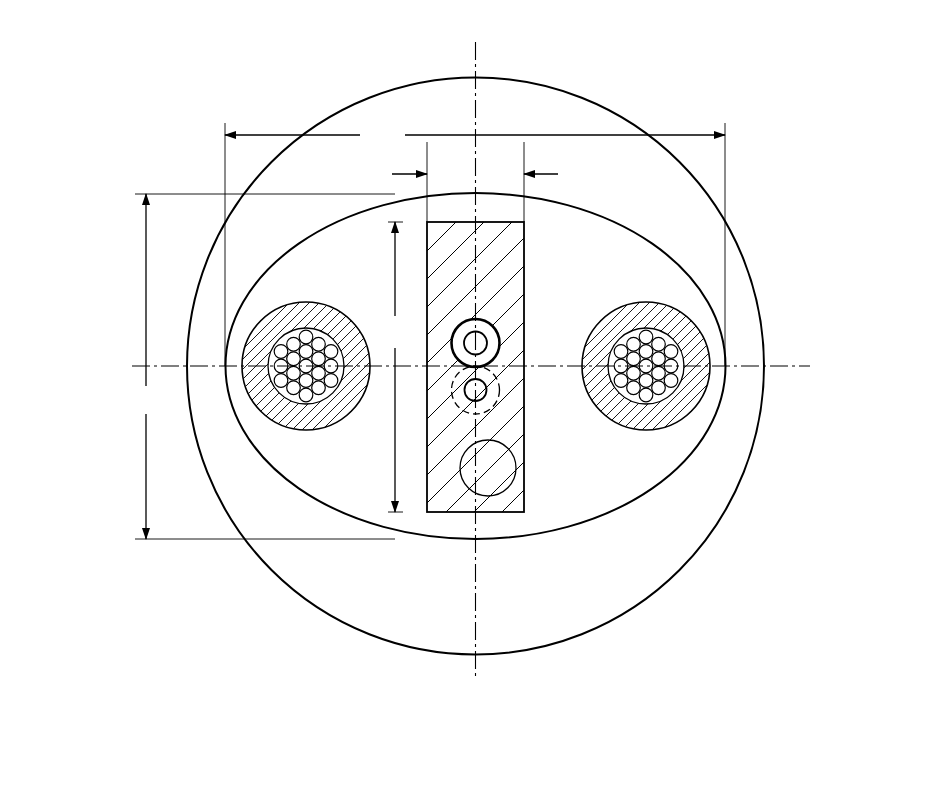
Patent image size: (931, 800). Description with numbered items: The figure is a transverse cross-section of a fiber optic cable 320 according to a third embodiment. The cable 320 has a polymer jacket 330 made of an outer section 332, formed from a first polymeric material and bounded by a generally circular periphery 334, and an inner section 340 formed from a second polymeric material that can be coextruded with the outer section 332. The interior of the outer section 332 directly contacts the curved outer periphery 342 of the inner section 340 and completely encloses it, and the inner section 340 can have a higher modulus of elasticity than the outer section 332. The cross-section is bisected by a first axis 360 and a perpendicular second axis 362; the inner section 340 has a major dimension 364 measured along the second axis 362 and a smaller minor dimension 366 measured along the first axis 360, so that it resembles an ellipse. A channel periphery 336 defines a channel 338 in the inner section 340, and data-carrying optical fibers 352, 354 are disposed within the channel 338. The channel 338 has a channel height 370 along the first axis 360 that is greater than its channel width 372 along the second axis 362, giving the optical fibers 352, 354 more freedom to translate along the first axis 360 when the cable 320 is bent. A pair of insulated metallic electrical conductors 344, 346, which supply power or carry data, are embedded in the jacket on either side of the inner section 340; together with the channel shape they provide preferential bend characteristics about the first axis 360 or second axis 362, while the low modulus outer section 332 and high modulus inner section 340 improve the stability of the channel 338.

The fiber optic cable 320 is at (168, 103).
The polymer jacket 330 is at (273, 580).
The outer section 332 is at (737, 442).
The periphery 334 is at (342, 625).
The channel periphery 336 is at (545, 530).
The channel 338 is at (518, 478).
The inner section 340 is at (493, 530).
The outer periphery 342 is at (530, 537).
The insulated metallic electrical conductor 344 is at (293, 433).
The insulated metallic electrical conductor 346 is at (705, 337).
The optical fiber 352 is at (502, 353).
The optical fiber 354 is at (498, 407).
The first axis 360 is at (476, 346).
The second axis 362 is at (492, 365).
The major dimension 364 is at (475, 244).
The minor dimension 366 is at (263, 366).
The channel height 370 is at (399, 367).
The channel width 372 is at (475, 182).